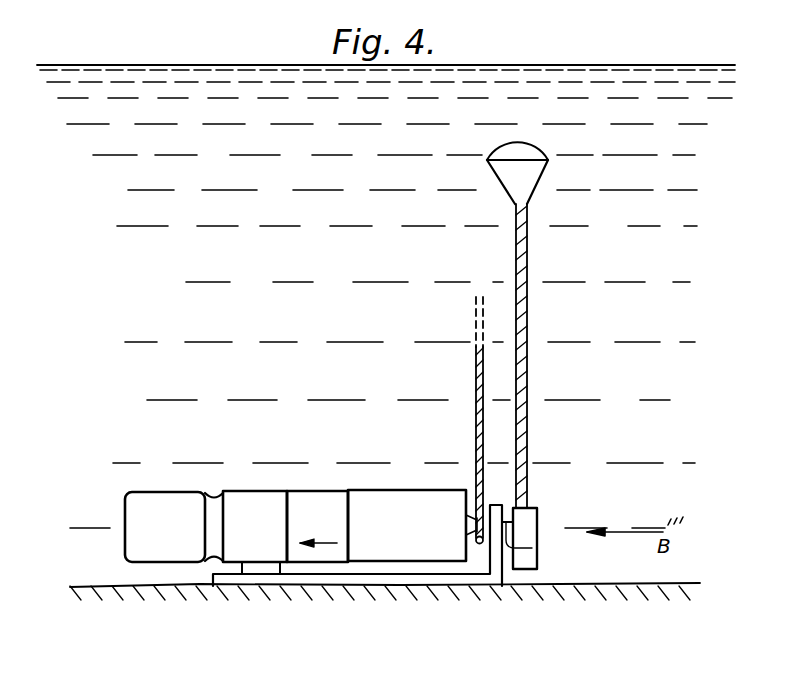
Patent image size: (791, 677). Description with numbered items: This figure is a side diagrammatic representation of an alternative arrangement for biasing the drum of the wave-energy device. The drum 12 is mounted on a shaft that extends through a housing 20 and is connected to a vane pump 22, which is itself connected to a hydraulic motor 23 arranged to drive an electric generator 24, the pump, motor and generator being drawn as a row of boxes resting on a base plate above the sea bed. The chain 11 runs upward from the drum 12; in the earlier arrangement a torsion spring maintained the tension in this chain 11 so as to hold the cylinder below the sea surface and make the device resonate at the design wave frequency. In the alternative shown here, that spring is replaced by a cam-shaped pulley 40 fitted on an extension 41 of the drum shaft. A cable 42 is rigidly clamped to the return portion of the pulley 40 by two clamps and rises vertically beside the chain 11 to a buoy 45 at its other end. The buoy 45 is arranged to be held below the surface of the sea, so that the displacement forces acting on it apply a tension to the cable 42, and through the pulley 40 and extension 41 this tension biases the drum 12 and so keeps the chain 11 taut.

The chain 11 is at (476, 366).
The drum 12 is at (466, 528).
The housing 20 is at (405, 505).
The vane pump 22 is at (322, 497).
The hydraulic motor 23 is at (237, 491).
The electric generator 24 is at (157, 505).
The cam-shaped pulley 40 is at (540, 511).
The extension of the shaft 41 is at (532, 548).
The cable 42 is at (528, 428).
The buoy 45 is at (548, 160).